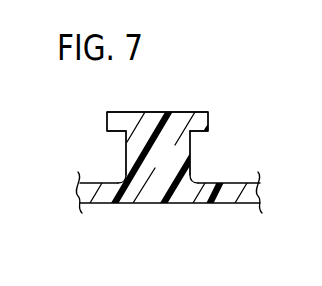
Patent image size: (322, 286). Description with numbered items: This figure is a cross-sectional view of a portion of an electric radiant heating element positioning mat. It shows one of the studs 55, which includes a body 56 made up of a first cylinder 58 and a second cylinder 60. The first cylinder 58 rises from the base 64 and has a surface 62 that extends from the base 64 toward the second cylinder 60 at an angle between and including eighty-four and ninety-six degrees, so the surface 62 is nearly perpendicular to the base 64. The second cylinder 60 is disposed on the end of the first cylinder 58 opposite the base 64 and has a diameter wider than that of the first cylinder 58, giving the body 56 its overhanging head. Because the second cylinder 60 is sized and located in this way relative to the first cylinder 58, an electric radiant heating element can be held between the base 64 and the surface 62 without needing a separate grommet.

The stud 55 is at (178, 82).
The body 56 is at (74, 124).
The first cylinder 58 is at (190, 146).
The second cylinder 60 is at (208, 112).
The surface 62 is at (172, 165).
The base 64 is at (227, 189).